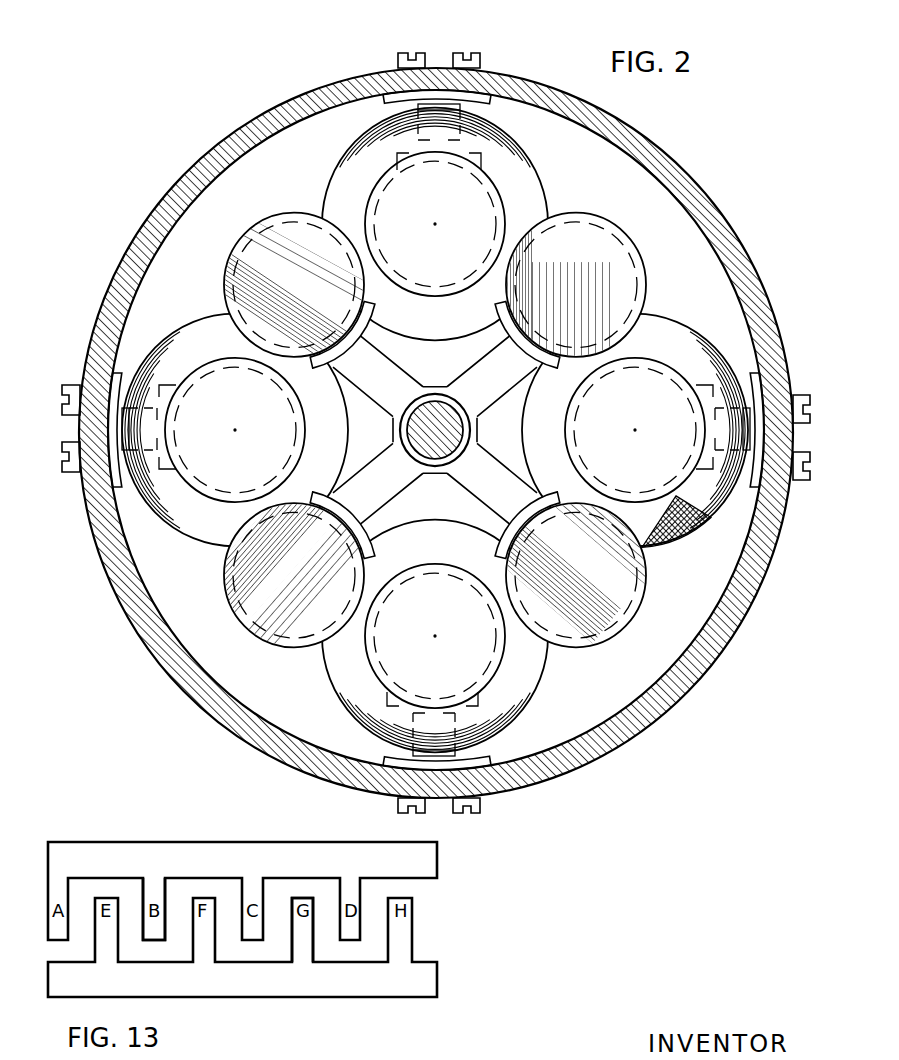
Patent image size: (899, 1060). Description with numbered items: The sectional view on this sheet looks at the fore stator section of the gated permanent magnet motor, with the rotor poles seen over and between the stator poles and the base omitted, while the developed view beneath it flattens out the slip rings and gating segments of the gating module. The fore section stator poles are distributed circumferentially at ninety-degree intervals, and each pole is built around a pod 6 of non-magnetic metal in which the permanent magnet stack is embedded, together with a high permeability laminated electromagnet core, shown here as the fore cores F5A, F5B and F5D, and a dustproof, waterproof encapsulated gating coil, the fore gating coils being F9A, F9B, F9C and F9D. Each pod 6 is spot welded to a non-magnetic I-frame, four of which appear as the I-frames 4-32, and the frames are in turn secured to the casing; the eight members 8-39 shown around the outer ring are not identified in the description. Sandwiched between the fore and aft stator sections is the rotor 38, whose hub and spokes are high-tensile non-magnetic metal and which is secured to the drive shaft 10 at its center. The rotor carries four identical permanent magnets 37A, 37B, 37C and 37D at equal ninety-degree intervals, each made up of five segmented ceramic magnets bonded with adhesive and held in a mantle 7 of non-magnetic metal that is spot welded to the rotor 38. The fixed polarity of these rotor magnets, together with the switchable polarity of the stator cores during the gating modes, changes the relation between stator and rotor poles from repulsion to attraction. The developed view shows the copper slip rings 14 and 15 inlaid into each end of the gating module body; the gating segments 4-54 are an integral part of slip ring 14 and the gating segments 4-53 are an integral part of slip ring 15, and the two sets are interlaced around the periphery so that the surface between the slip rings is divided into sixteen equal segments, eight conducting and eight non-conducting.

In FIG. 2, the I-frame 4-32 is at (392, 96).
In FIG. 2, the bolt heads 8-39 is at (452, 55).
In FIG. 2, the fore gating coil F9A is at (158, 357).
In FIG. 2, the fore gating coil F9B is at (349, 150).
In FIG. 2, the fore gating coil F9C is at (690, 538).
In FIG. 2, the fore gating coil F9D is at (378, 740).
In FIG. 2, the fore stator core F5A is at (205, 468).
In FIG. 2, the fore stator core F5B is at (468, 190).
In FIG. 2, the fore stator core F5D is at (462, 668).
In FIG. 2, the pod 6 is at (367, 205).
In FIG. 2, the mantle 7 is at (248, 243).
In FIG. 2, the rotor permanent magnet 37A is at (268, 288).
In FIG. 2, the rotor permanent magnet 37B is at (580, 255).
In FIG. 2, the rotor permanent magnet 37C is at (603, 588).
In FIG. 2, the rotor permanent magnet 37D is at (238, 557).
In FIG. 2, the drive shaft 10 is at (435, 408).
In FIG. 2, the rotor 38 is at (468, 503).
In FIG. 13, the slip ring 14 is at (437, 857).
In FIG. 13, the slip ring 15 is at (437, 990).
In FIG. 13, the gating segments 4-54 is at (153, 885).
In FIG. 13, the gating segments 4-53 is at (300, 950).